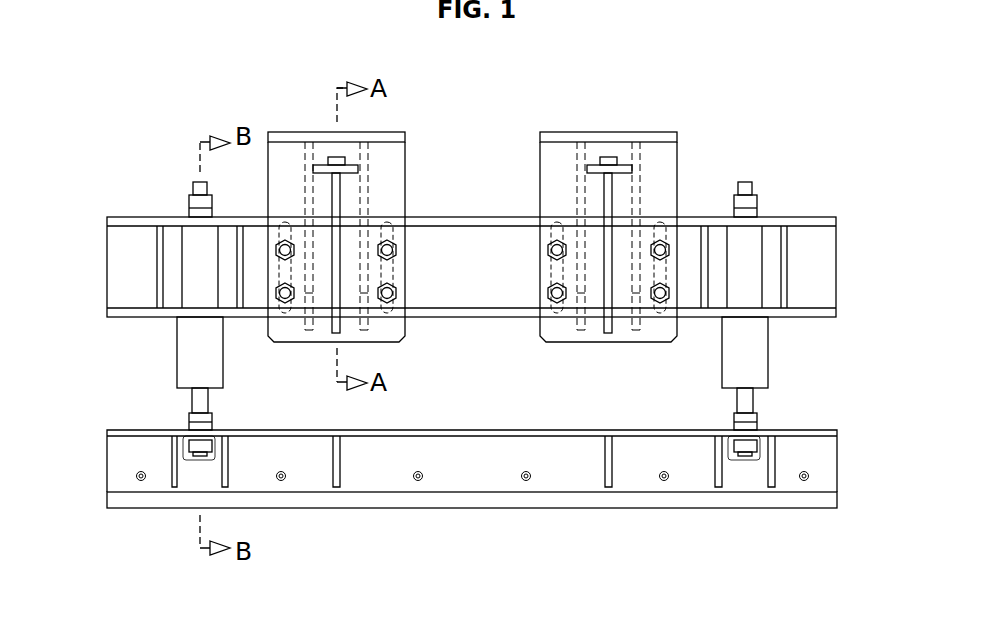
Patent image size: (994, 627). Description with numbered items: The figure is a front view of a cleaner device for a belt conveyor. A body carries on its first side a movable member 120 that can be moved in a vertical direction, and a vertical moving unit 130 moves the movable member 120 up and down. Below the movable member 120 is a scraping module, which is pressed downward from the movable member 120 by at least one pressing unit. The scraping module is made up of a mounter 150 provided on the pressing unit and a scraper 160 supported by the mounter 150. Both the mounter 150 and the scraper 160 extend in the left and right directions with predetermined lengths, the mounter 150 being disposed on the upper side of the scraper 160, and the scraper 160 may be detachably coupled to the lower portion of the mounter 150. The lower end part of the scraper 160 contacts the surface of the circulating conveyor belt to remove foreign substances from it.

The movable member 120 is at (808, 225).
The vertical moving unit 130 is at (624, 184).
The mounter 150 is at (583, 488).
The scraper 160 is at (458, 508).